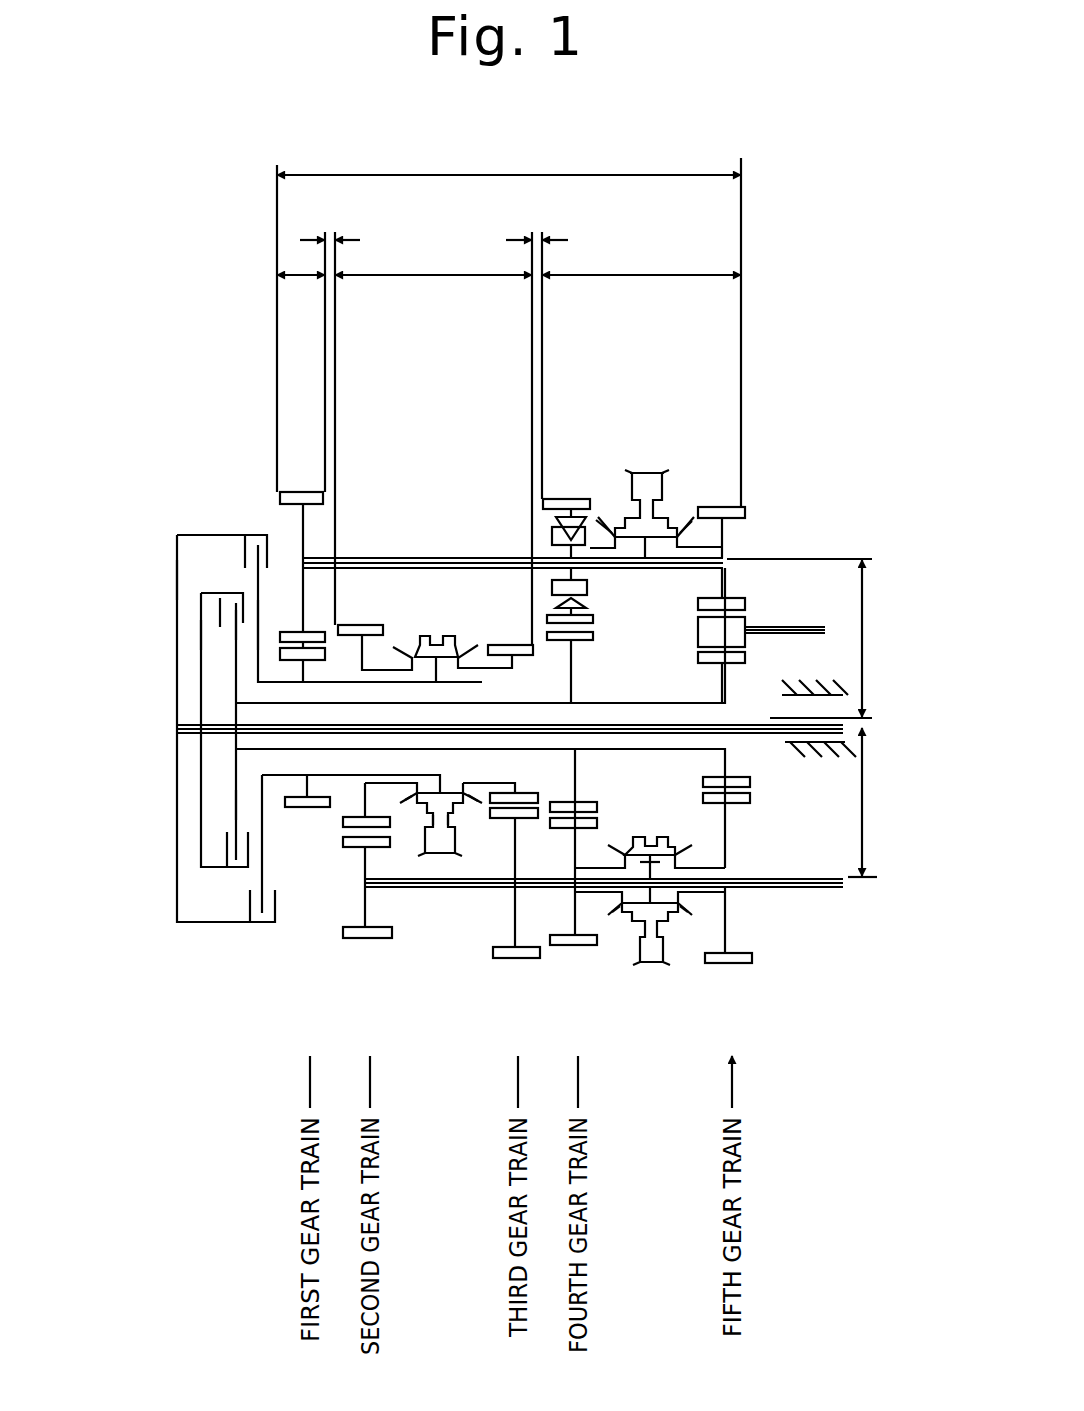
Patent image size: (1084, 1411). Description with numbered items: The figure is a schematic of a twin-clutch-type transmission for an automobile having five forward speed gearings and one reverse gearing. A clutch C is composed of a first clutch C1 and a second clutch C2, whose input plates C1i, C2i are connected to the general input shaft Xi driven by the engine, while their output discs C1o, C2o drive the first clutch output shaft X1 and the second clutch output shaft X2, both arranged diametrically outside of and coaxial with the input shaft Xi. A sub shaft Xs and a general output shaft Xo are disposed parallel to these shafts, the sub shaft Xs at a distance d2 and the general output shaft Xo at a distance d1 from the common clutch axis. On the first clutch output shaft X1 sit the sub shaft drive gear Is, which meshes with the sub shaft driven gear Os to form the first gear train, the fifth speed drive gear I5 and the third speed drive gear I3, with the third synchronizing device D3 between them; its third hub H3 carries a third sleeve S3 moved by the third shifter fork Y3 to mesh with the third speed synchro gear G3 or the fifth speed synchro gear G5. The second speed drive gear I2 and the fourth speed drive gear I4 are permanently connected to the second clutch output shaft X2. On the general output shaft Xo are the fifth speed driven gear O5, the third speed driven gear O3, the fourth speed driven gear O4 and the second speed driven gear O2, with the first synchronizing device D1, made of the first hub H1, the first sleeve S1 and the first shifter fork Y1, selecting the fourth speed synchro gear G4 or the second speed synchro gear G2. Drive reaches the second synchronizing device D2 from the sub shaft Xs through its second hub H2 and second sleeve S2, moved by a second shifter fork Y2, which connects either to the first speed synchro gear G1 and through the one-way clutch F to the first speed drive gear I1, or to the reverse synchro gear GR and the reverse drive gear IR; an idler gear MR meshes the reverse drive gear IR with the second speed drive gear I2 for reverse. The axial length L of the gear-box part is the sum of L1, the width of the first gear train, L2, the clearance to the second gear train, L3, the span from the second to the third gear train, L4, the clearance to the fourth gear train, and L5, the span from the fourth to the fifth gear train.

The axial length of gear-box part L is at (509, 326).
The width of first gear train L1 is at (301, 260).
The clearance between first and second gear trains L2 is at (330, 411).
The length from second gear train to third gear train L3 is at (433, 260).
The clearance between third and fourth gear trains L4 is at (537, 421).
The length from fourth gear train to fifth gear train L5 is at (641, 260).
The distance to sub shaft axis d2 is at (813, 638).
The distance to general output shaft axis d1 is at (874, 802).
The general input shaft Xi is at (767, 737).
The first clutch output shaft X1 is at (482, 682).
The second clutch output shaft X2 is at (642, 699).
The general output shaft Xo is at (793, 888).
The sub shaft Xs is at (724, 556).
The clutch C is at (286, 707).
The first clutch C1 is at (220, 533).
The second clutch C2 is at (220, 591).
The input plate of first clutch C1i is at (175, 572).
The input plate of second clutch C2i is at (200, 633).
The output disc of first clutch C1o is at (258, 618).
The output disc of second clutch C2o is at (245, 538).
The sub shaft driven gear Os is at (305, 492).
The sub shaft drive gear Is is at (317, 808).
The fifth speed drive gear I5 is at (385, 628).
The third speed drive gear I3 is at (500, 645).
The first speed drive gear I1 is at (562, 498).
The one-way clutch F is at (548, 527).
The fourth speed drive gear I4 is at (583, 642).
The second planetary carrier Y2 is at (647, 464).
The second sleeve S2 is at (657, 513).
The second hub H2 is at (603, 528).
The first speed synchro gear G1 is at (605, 527).
The reverse synchro gear GR is at (687, 527).
The second synchronizing device D2 is at (676, 394).
The reverse drive gear IR is at (737, 507).
The second speed drive gear I2 is at (733, 663).
The idler gear MR is at (745, 622).
The fifth speed synchro gear G5 is at (403, 806).
The fifth speed driven gear O5 is at (357, 938).
The third synchronizing device D3 is at (336, 958).
The third hub H3 is at (445, 788).
The third shifter fork Y3 is at (436, 853).
The third speed synchro gear G3 is at (478, 806).
The third sleeve S3 is at (430, 800).
The third speed driven gear O3 is at (515, 958).
The fourth speed driven gear O4 is at (575, 945).
The first sleeve S1 is at (640, 837).
The first hub H1 is at (660, 863).
The first shifter fork Y1 is at (650, 967).
The fourth speed synchro gear G4 is at (618, 915).
The second speed synchro gear G2 is at (687, 915).
The second speed driven gear O2 is at (735, 963).
The first synchronizing device D1 is at (774, 969).